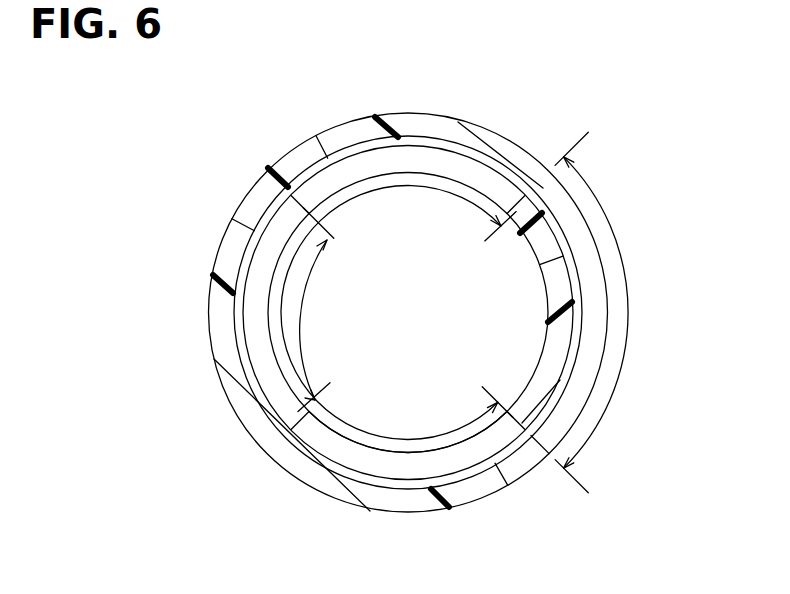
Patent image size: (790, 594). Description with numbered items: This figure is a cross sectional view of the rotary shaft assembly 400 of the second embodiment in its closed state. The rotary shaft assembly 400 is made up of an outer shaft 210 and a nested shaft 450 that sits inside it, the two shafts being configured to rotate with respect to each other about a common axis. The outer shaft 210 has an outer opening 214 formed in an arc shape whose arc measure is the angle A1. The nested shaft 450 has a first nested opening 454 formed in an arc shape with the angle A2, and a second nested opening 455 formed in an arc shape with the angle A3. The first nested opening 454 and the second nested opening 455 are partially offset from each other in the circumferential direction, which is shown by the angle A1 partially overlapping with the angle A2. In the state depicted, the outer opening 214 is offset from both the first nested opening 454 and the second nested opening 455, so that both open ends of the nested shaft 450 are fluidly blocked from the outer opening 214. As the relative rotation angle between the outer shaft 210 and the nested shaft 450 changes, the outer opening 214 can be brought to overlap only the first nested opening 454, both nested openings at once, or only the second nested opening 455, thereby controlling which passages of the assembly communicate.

The rotary shaft assembly 400 is at (212, 172).
The outer shaft 210 is at (400, 113).
The nested shaft 450 is at (343, 157).
The outer opening 214 is at (548, 192).
The first nested opening 454 is at (440, 158).
The second nested opening 455 is at (411, 468).
The angle of the outer opening A1 is at (602, 312).
The angle of the first nested opening A2 is at (398, 312).
The angle of the second nested opening A3 is at (432, 407).